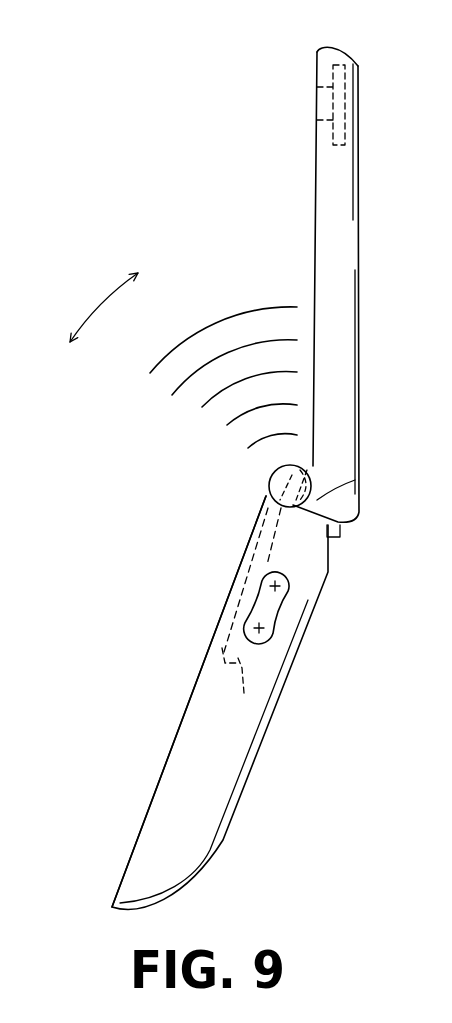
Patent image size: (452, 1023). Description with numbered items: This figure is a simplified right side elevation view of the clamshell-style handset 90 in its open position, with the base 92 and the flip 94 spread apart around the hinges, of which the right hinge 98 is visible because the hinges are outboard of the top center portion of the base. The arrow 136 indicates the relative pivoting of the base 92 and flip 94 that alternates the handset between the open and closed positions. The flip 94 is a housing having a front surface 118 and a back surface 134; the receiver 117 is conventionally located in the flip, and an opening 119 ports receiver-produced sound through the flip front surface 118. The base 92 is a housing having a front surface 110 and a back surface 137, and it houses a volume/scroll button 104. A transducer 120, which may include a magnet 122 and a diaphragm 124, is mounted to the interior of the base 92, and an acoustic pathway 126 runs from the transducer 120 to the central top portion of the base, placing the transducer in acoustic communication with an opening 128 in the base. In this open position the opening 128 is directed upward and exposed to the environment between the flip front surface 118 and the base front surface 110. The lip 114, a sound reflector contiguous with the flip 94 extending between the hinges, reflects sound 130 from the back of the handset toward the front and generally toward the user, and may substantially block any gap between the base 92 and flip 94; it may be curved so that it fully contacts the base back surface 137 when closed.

The handset 90 is at (205, 130).
The base 92 is at (120, 877).
The flip 94 is at (359, 162).
The right hinge 98 is at (355, 480).
The volume/scroll button 104 is at (280, 605).
The front surface of the base 110 is at (157, 782).
The lip 114 is at (339, 538).
The receiver 117 is at (354, 62).
The front surface of the flip 118 is at (315, 191).
The opening 119 is at (317, 103).
The transducer 120 is at (232, 627).
The magnet 122 is at (290, 577).
The diaphragm 124 is at (237, 687).
The acoustic pathway 126 is at (272, 506).
The opening 128 is at (308, 466).
The sound 130 is at (247, 312).
The back surface of the flip 134 is at (361, 258).
The arrow 136 is at (98, 303).
The back surface of the base 137 is at (240, 796).